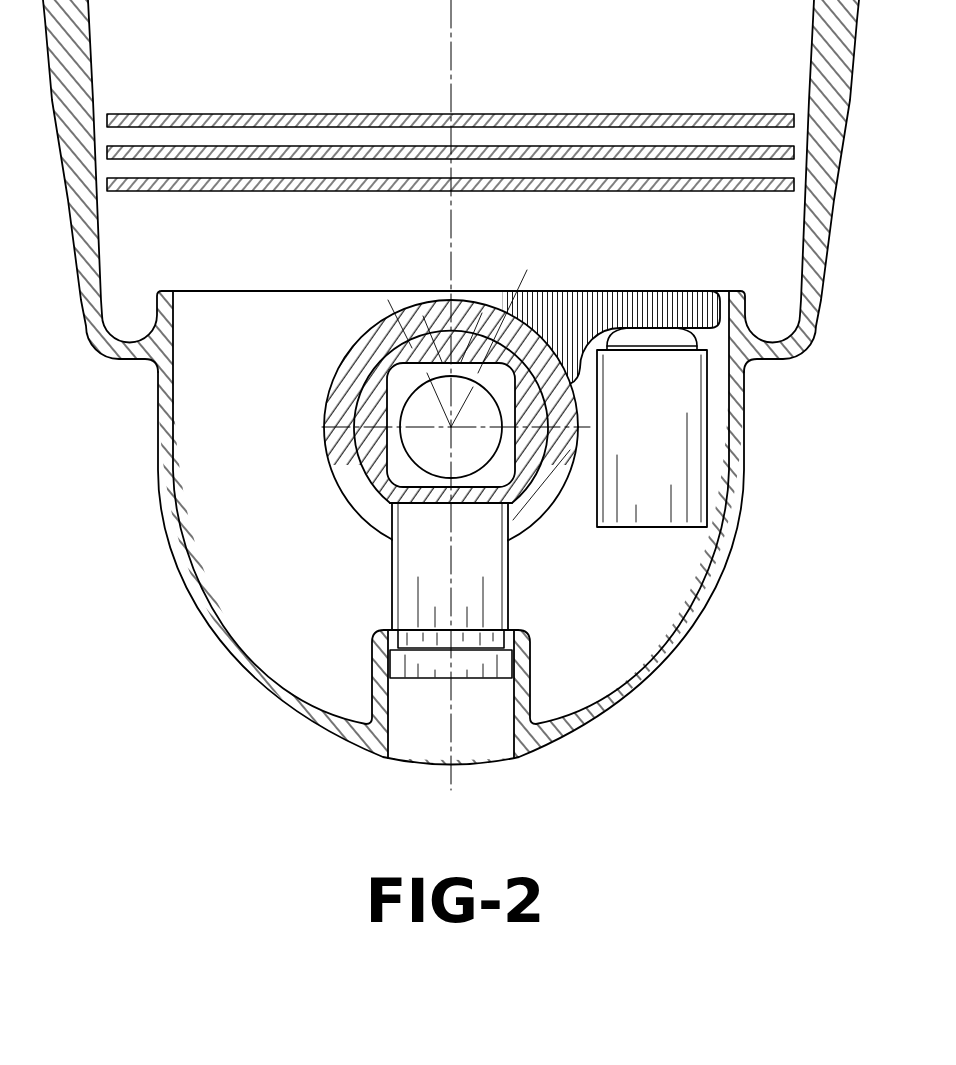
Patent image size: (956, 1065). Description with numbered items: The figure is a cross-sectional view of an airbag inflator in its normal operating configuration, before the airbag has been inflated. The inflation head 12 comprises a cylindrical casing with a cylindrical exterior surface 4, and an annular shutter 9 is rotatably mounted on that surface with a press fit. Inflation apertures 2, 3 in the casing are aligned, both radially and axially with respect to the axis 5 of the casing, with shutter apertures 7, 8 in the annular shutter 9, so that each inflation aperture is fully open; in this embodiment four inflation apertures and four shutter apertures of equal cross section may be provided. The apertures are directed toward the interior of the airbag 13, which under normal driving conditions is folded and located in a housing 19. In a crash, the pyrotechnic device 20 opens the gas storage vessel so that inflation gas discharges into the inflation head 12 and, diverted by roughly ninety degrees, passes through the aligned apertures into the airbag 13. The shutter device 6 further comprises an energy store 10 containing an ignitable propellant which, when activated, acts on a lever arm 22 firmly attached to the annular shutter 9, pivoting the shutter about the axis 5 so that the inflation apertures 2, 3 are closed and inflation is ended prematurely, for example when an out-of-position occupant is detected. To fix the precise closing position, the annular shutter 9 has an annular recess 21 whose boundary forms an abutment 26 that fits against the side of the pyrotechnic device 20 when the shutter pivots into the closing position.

The inflation aperture 2 is at (397, 350).
The inflation aperture 3 is at (498, 353).
The cylindrical exterior surface 4 is at (353, 395).
The axis 5 is at (451, 428).
The shutter device 6 is at (623, 585).
The shutter aperture 7 is at (412, 320).
The shutter aperture 8 is at (490, 320).
The annular shutter 9 is at (342, 478).
The energy store 10 is at (655, 475).
The inflation head 12 is at (535, 520).
The airbag 13 is at (686, 118).
The housing 19 is at (92, 60).
The pyrotechnic device 20 is at (435, 592).
The annular recess 21 is at (383, 517).
The lever arm 22 is at (689, 322).
The abutment 26 is at (358, 503).